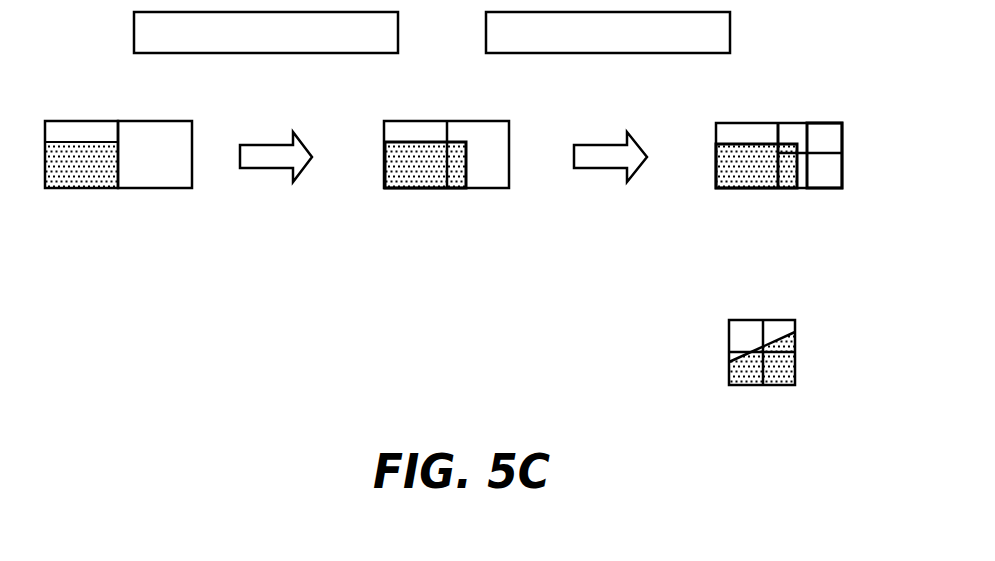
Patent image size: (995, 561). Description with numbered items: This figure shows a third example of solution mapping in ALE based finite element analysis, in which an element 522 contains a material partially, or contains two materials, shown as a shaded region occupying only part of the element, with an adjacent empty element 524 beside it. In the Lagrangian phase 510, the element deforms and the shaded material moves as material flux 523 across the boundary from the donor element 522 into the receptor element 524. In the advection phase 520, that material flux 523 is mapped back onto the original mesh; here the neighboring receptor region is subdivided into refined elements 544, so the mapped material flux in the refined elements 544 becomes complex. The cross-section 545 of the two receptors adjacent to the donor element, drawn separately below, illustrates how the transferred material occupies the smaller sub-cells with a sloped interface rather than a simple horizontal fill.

The Lagrangian phase 510 is at (266, 32).
The advection phase 520 is at (608, 32).
The element 522 is at (80, 188).
The material flux 523 is at (410, 177).
The element 524 is at (147, 188).
The refined elements 544 is at (807, 188).
The cross-section 545 is at (788, 417).